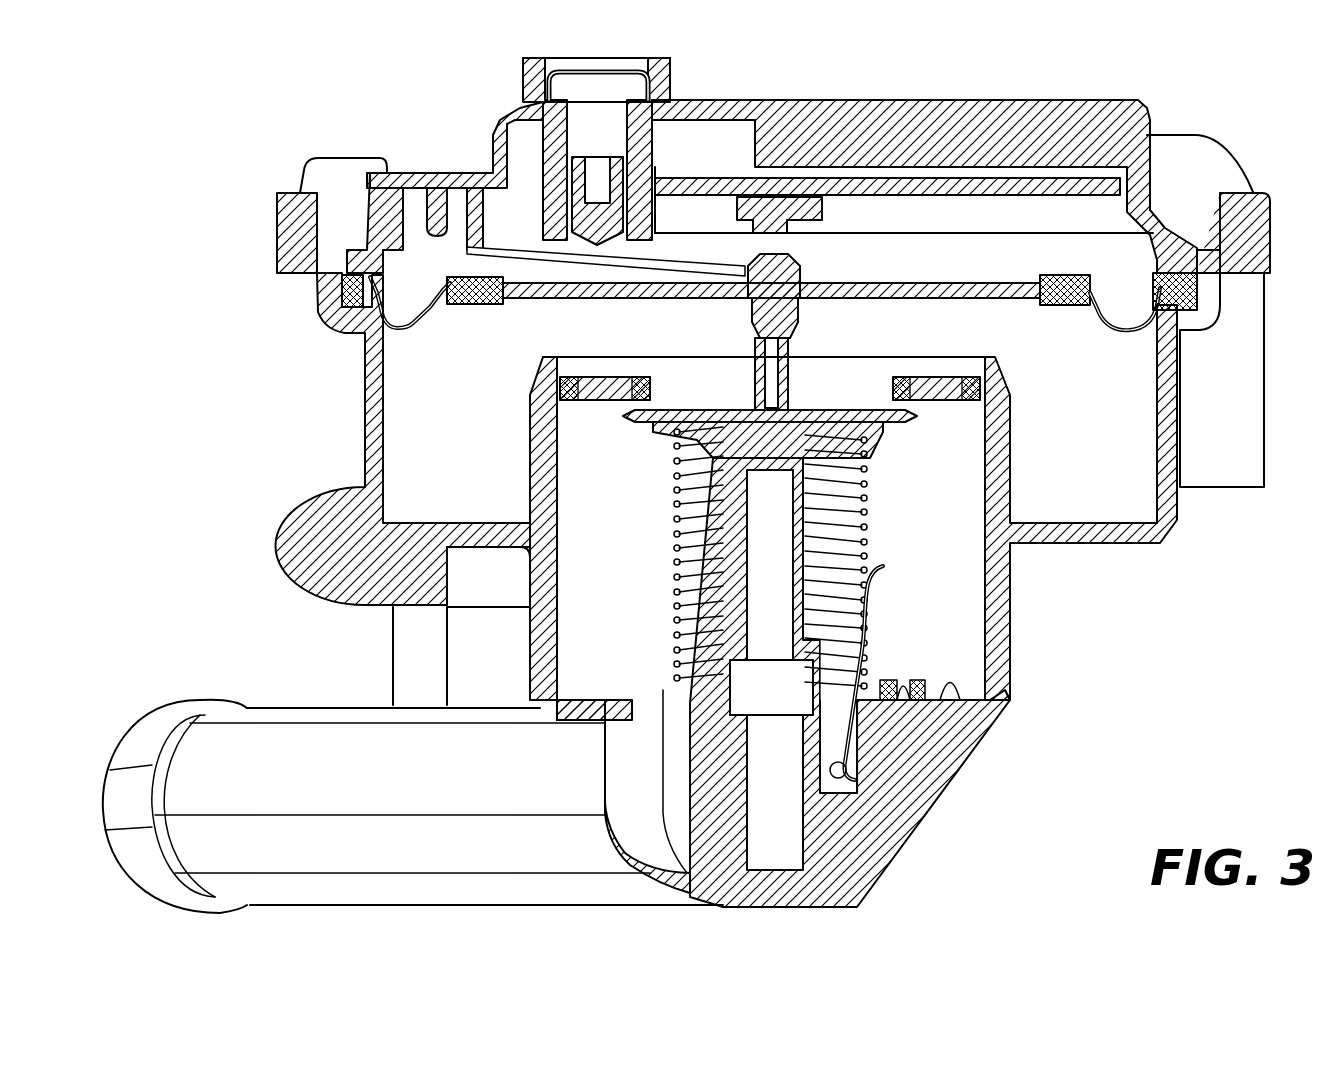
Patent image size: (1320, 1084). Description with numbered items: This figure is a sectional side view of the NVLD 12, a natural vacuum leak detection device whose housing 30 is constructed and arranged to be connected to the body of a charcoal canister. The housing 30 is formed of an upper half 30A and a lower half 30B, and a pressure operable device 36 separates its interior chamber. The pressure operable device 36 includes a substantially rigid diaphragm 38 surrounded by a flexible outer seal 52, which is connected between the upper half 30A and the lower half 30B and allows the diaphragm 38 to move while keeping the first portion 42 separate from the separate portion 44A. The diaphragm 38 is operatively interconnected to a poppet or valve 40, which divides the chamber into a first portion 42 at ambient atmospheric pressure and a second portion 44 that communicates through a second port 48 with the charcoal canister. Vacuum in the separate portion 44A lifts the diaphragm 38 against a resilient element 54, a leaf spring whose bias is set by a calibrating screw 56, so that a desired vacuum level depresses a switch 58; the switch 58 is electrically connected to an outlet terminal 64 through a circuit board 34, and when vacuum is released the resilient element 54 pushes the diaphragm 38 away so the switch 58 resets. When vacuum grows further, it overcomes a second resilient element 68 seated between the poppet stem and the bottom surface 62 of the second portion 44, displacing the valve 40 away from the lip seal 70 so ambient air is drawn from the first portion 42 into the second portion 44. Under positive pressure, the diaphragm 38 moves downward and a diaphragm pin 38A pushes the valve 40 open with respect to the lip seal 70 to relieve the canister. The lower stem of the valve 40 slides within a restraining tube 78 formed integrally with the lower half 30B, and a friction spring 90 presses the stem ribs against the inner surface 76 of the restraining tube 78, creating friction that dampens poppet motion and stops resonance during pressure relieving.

The NVLD 12 is at (240, 145).
The housing 30 is at (530, 883).
The upper half 30A is at (292, 240).
The lower half 30B is at (372, 468).
The circuit board 34 is at (900, 185).
The pressure operable device 36 is at (700, 258).
The diaphragm 38 is at (965, 300).
The diaphragm pin 38A is at (795, 328).
The valve 40 is at (885, 455).
The first portion 42 is at (1130, 500).
The second portion 44 is at (605, 655).
The separate portion 44A is at (1020, 245).
The second port 48 is at (163, 715).
The flexible outer seal 52 is at (395, 333).
The resilient element 54 is at (515, 290).
The calibrating screw 56 is at (550, 94).
The switch 58 is at (790, 200).
The bottom surface 62 is at (950, 690).
The outlet terminal 64 is at (1240, 365).
The second resilient element 68 is at (870, 567).
The lip seal 70 is at (690, 408).
The inner surface 76 is at (740, 680).
The restraining tube 78 is at (720, 572).
The friction spring 90 is at (845, 783).